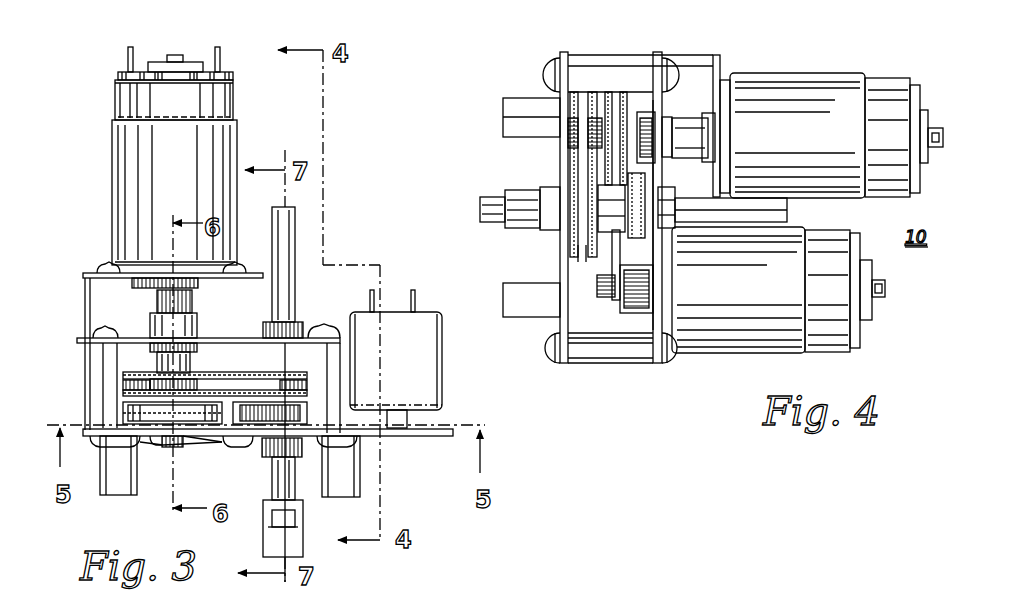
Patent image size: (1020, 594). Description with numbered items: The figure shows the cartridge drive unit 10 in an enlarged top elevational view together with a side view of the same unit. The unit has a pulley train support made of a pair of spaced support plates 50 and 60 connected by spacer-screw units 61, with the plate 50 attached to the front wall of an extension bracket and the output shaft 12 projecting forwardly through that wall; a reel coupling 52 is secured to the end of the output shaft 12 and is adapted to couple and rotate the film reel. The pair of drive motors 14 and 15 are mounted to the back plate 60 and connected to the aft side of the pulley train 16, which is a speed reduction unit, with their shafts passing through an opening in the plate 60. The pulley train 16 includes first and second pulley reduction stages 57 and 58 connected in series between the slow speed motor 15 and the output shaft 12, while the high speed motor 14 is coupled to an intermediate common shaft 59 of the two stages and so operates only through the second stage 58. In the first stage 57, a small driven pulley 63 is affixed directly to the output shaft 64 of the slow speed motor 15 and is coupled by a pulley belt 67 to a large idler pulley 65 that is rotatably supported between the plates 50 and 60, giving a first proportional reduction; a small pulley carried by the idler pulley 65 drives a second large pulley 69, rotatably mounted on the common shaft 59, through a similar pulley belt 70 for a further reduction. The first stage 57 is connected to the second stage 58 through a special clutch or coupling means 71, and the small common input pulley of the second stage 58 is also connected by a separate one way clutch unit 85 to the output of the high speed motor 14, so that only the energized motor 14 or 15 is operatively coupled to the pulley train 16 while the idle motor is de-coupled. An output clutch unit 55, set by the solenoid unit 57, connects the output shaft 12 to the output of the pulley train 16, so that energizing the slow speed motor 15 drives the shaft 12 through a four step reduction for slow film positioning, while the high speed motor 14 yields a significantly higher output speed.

In FIG. 3, the cartridge drive unit 10 is at (106, 72).
In FIG. 3, the output shaft 12 is at (303, 513).
In FIG. 4, the output shaft 12 is at (480, 207).
In FIG. 3, the high speed motor 14 is at (233, 103).
In FIG. 4, the high speed motor 14 is at (810, 73).
In FIG. 3, the slow speed motor 15 is at (233, 142).
In FIG. 4, the slow speed motor 15 is at (728, 352).
In FIG. 3, the pulley train 16 is at (100, 381).
In FIG. 4, the pulley train 16 is at (600, 50).
In FIG. 3, the pulley train support plate 50 is at (420, 440).
In FIG. 4, the pulley train support plate 50 is at (563, 368).
In FIG. 3, the reel coupling 52 is at (262, 535).
In FIG. 3, the output clutch unit 55 is at (307, 328).
In FIG. 3, the first pulley reduction stage 57 is at (257, 442).
In FIG. 4, the first pulley reduction stage 57 is at (593, 263).
In FIG. 3, the second pulley reduction stage 58 is at (192, 450).
In FIG. 4, the second pulley reduction stage 58 is at (562, 157).
In FIG. 3, the intermediate common shaft 59 is at (150, 443).
In FIG. 3, the back support plate 60 is at (338, 327).
In FIG. 4, the back support plate 60 is at (658, 368).
In FIG. 3, the spacer-screw units 61 is at (92, 330).
In FIG. 4, the spacer-screw units 61 is at (607, 368).
In FIG. 4, the small driven pulley 63 is at (623, 260).
In FIG. 4, the output shaft of slow speed motor 64 is at (640, 302).
In FIG. 3, the large idler pulley 65 is at (303, 365).
In FIG. 4, the large idler pulley 65 is at (623, 250).
In FIG. 4, the pulley belt 67 is at (613, 300).
In FIG. 3, the second large pulley 69 is at (128, 383).
In FIG. 4, the second large pulley 69 is at (623, 87).
In FIG. 3, the pulley belt 70 is at (128, 384).
In FIG. 4, the pulley belt 70 is at (612, 87).
In FIG. 3, the clutch coupling means 71 is at (197, 367).
In FIG. 3, the one way clutch unit 85 is at (200, 333).